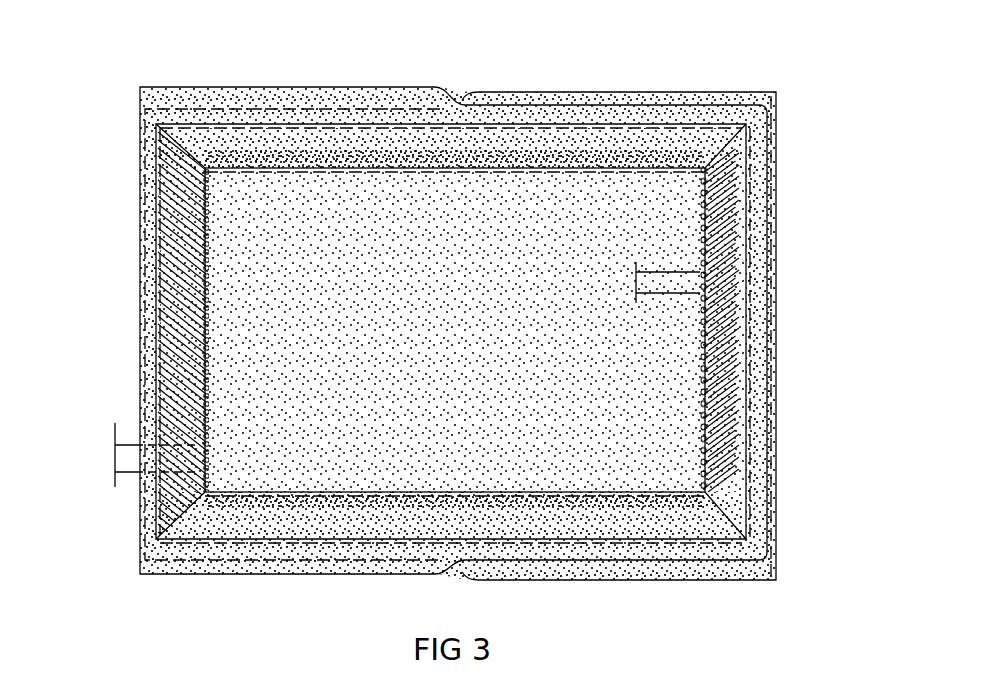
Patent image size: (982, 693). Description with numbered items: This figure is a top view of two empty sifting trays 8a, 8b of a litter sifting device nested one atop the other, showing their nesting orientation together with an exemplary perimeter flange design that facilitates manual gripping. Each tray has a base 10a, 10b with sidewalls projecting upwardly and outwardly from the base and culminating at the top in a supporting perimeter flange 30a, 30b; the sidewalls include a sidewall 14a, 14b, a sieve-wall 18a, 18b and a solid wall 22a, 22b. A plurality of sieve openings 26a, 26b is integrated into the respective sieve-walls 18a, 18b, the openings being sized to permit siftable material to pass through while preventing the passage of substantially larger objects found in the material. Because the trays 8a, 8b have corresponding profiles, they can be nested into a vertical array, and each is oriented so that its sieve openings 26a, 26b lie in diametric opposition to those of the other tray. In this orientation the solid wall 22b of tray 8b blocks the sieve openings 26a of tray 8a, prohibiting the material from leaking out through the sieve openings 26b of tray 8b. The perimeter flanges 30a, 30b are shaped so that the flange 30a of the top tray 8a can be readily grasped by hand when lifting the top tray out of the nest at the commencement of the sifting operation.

The tray 8a is at (140, 585).
The tray 8b is at (767, 593).
The base 10a is at (498, 277).
The base 10b is at (592, 503).
The sidewall 14a is at (445, 150).
The sidewall 14b is at (338, 147).
The sieve-wall 18a is at (700, 388).
The sieve-wall 18b is at (178, 245).
The solid wall 22a is at (185, 334).
The solid wall 22b is at (740, 349).
The sieve openings 26a is at (700, 282).
The sieve openings 26b is at (185, 460).
The perimeter flange 30a is at (150, 283).
The perimeter flange 30b is at (752, 302).